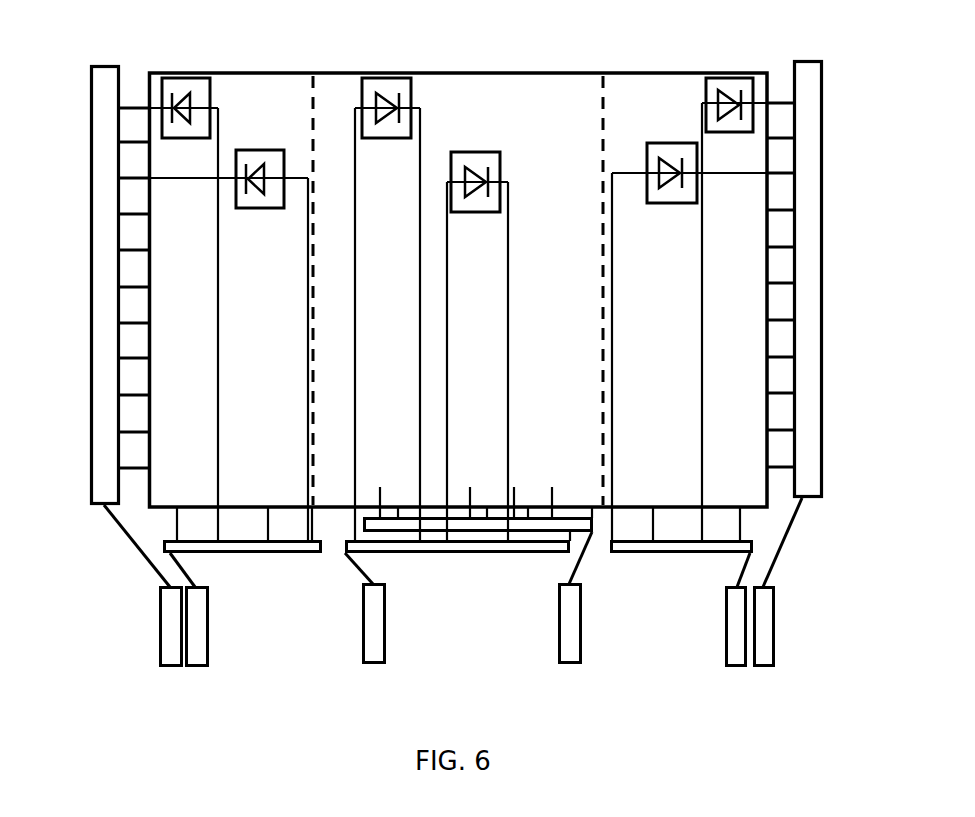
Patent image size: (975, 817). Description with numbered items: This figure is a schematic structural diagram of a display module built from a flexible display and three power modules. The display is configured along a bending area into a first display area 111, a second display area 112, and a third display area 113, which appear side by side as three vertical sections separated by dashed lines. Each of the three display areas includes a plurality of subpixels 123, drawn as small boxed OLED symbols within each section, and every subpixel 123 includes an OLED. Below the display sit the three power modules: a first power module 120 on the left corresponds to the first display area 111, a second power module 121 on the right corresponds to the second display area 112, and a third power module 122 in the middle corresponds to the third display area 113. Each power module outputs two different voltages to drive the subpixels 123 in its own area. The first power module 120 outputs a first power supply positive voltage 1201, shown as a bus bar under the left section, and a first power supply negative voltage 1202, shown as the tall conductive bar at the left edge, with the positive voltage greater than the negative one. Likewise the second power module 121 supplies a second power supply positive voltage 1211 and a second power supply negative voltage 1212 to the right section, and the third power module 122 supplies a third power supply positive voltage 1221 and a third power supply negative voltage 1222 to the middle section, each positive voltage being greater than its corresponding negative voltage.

The first display area 111 is at (222, 70).
The second display area 112 is at (737, 70).
The third display area 113 is at (455, 70).
The first power module 120 is at (178, 672).
The second power module 121 is at (757, 672).
The third power module 122 is at (472, 667).
The subpixel 123 is at (180, 70).
The first power supply positive voltage 1201 is at (242, 560).
The first power supply negative voltage 1202 is at (97, 255).
The second power supply positive voltage 1211 is at (725, 548).
The second power supply negative voltage 1212 is at (823, 260).
The third power supply positive voltage 1221 is at (485, 562).
The third power supply negative voltage 1222 is at (473, 518).